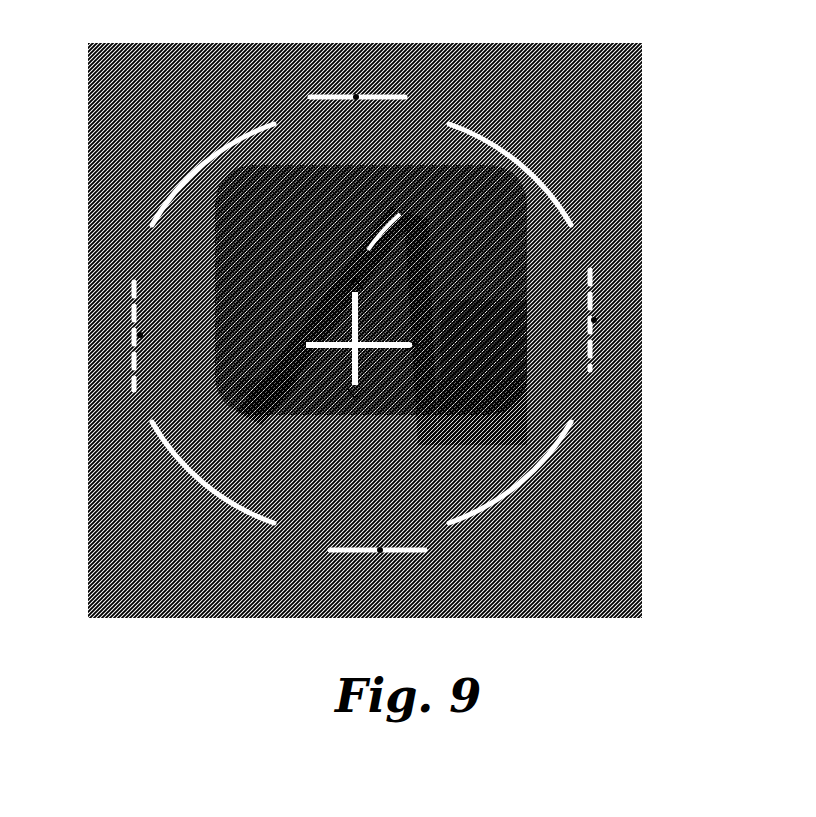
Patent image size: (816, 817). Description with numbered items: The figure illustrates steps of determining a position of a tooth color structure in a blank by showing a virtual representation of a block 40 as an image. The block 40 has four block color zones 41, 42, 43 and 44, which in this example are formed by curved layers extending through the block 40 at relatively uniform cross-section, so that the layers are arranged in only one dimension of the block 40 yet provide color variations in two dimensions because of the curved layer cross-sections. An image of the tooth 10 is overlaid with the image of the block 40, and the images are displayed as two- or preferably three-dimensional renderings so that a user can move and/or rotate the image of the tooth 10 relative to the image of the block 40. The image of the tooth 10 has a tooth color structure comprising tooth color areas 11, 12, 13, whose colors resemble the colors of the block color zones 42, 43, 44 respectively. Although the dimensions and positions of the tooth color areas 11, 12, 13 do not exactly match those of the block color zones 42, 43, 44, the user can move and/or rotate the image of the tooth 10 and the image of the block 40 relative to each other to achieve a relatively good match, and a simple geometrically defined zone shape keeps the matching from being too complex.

The tooth 10 is at (410, 437).
The tooth color area 11 is at (365, 240).
The tooth color area 12 is at (268, 377).
The tooth color area 13 is at (252, 423).
The block 40 is at (485, 172).
The block color zone 41 is at (503, 185).
The block color zone 42 is at (500, 233).
The block color zone 43 is at (505, 322).
The block color zone 44 is at (498, 418).